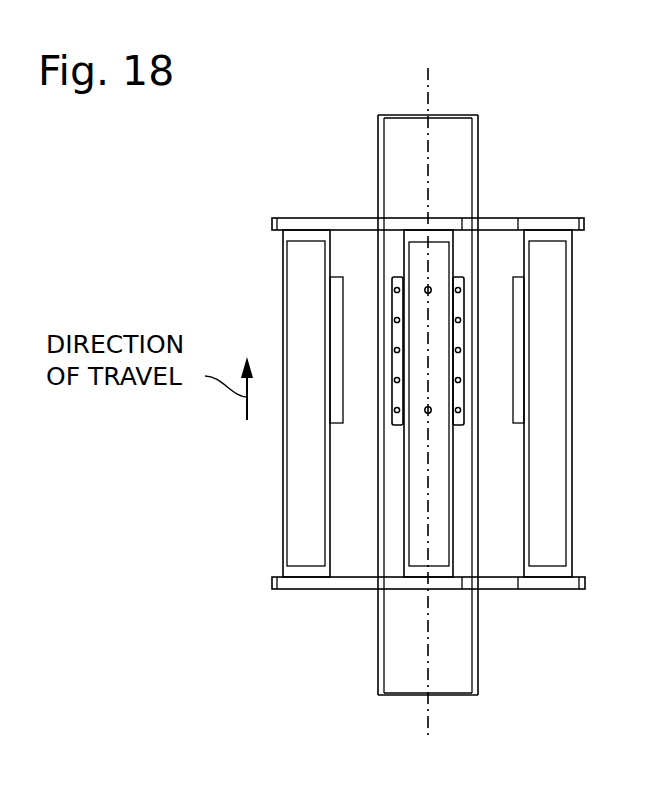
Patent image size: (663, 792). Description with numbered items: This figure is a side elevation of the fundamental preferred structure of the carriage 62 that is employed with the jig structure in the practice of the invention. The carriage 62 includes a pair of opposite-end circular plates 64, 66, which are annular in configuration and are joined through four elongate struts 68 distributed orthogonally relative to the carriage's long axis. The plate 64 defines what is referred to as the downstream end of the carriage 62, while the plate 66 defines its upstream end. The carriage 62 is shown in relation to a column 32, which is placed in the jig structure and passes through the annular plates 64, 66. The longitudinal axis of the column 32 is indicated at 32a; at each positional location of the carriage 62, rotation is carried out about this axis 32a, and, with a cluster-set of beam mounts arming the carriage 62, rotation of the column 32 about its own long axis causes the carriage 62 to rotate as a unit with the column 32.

The column 32 is at (400, 648).
The longitudinal axis of the column 32a is at (430, 74).
The carriage 62 is at (427, 398).
The circular plate 64 is at (311, 217).
The circular plate 66 is at (302, 592).
The struts 68 is at (310, 268).